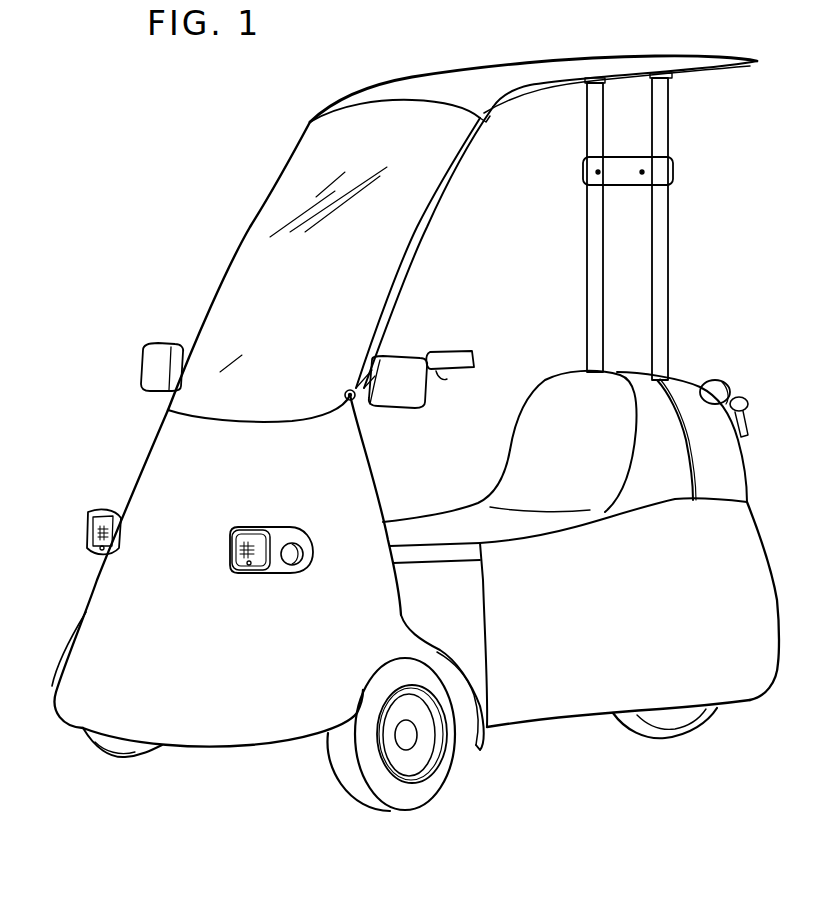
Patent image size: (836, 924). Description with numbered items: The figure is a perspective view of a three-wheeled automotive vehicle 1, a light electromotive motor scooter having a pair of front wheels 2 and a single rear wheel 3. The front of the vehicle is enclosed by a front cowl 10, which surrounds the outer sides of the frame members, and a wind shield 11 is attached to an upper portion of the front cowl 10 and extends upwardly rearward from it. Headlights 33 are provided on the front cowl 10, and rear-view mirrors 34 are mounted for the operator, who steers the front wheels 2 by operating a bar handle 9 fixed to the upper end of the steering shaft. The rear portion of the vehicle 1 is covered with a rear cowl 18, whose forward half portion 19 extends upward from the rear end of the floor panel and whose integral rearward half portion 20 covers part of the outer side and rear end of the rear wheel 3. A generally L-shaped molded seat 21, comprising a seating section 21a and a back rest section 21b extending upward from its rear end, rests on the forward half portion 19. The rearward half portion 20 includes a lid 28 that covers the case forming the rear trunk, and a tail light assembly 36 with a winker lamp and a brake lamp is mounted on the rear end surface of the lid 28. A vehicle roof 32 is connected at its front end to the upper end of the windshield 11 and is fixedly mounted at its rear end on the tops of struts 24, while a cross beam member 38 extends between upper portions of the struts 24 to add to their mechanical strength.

The three-wheeled automotive vehicle 1 is at (158, 218).
The front wheels 2 is at (105, 740).
The rear wheel 3 is at (703, 720).
The bar handle 9 is at (457, 360).
The front cowl 10 is at (225, 715).
The wind shield 11 is at (290, 187).
The rear cowl 18 is at (609, 707).
The forward half portion 19 is at (533, 707).
The rearward half portion 20 is at (744, 559).
The seat 21 is at (509, 533).
The seating section 21a is at (424, 520).
The back rest section 21b is at (563, 426).
The struts 24 is at (587, 255).
The lid 28 is at (727, 455).
The vehicle roof 32 is at (507, 77).
The headlights 33 is at (85, 523).
The rear-view mirrors 34 is at (147, 370).
The tail light assembly 36 is at (723, 390).
The cross beam member 38 is at (622, 176).